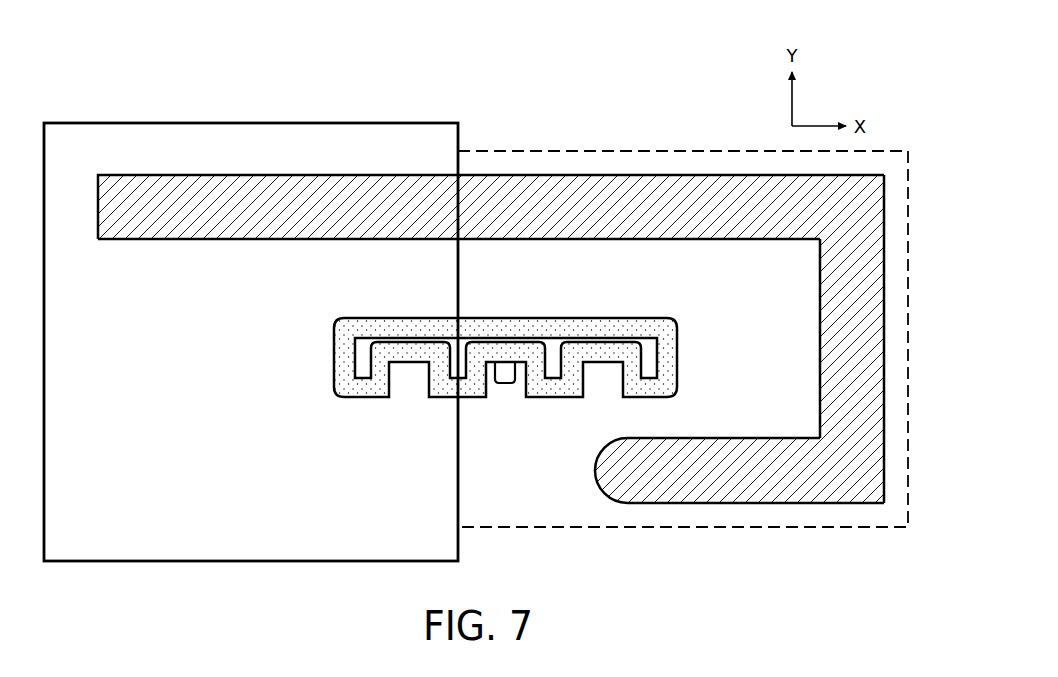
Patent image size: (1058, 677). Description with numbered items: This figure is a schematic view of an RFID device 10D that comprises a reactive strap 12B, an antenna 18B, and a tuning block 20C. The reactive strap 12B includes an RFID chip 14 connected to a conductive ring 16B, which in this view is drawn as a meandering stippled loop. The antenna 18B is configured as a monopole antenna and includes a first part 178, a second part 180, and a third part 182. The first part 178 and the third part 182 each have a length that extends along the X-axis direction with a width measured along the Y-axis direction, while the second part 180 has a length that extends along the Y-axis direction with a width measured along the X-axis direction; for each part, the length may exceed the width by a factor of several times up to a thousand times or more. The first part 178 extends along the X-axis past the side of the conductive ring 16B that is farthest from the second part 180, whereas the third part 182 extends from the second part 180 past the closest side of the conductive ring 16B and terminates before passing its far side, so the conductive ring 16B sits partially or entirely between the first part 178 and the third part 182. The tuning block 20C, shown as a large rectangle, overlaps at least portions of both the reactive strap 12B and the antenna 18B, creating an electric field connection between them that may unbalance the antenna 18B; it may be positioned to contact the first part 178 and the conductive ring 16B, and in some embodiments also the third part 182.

The RFID device 10D is at (713, 124).
The reactive strap 12B is at (588, 406).
The RFID chip 14 is at (503, 383).
The conductive ring 16B is at (677, 360).
The antenna 18B is at (529, 339).
The tuning block 20C is at (338, 140).
The first part 178 is at (559, 183).
The second part 180 is at (873, 438).
The third part 182 is at (717, 490).